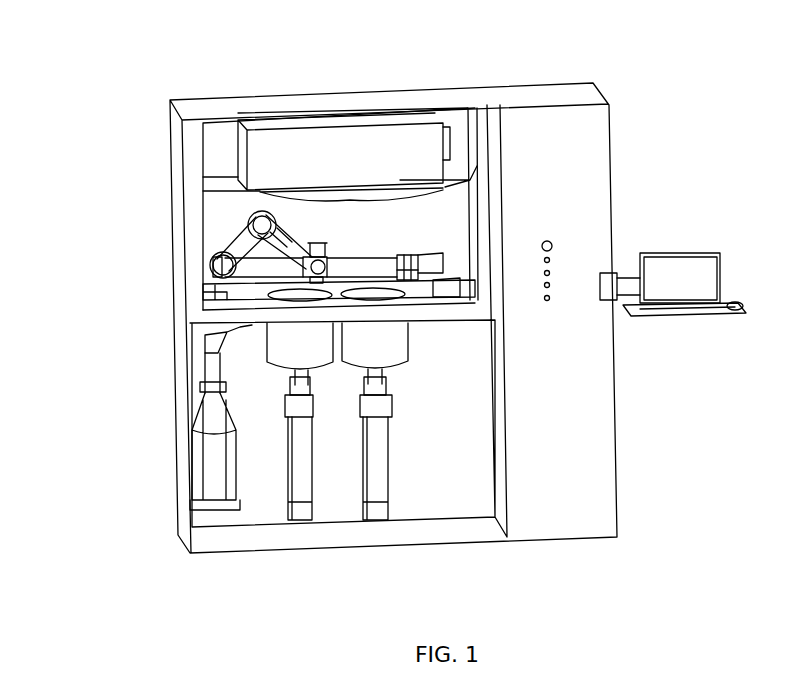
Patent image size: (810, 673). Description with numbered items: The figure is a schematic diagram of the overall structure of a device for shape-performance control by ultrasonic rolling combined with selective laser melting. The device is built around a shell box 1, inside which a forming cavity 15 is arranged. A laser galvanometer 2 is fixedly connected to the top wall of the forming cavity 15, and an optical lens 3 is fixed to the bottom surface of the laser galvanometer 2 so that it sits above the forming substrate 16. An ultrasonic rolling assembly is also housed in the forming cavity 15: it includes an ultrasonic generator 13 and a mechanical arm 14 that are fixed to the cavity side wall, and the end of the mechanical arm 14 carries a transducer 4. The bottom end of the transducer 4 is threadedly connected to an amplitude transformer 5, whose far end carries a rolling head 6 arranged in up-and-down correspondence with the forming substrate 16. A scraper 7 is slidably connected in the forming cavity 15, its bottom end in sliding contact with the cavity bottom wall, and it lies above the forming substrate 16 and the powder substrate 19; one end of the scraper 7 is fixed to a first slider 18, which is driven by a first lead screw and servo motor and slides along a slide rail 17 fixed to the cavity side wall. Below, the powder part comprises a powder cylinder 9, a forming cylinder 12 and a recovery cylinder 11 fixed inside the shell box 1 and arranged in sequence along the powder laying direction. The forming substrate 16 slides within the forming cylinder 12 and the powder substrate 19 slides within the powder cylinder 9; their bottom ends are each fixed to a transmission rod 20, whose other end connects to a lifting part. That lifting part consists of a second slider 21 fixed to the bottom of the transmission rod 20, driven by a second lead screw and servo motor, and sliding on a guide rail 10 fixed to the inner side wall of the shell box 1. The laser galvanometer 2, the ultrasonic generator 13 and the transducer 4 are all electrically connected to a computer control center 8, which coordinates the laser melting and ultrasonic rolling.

The shell box 1 is at (192, 151).
The laser galvanometer 2 is at (272, 150).
The optical lens 3 is at (308, 195).
The transducer 4 is at (330, 277).
The amplitude transformer 5 is at (331, 276).
The rolling head 6 is at (333, 278).
The scraper 7 is at (420, 253).
The computer control center 8 is at (672, 282).
The powder cylinder 9 is at (383, 345).
The guide rail 10 is at (377, 452).
The recovery cylinder 11 is at (210, 470).
The forming cylinder 12 is at (297, 343).
The ultrasonic generator 13 is at (203, 292).
The mechanical arm 14 is at (243, 243).
The forming cavity 15 is at (223, 227).
The forming substrate 16 is at (268, 302).
The slide rail 17 is at (420, 265).
The first slider 18 is at (407, 270).
The powder substrate 19 is at (452, 297).
The transmission rod 20 is at (308, 375).
The second slider 21 is at (313, 410).